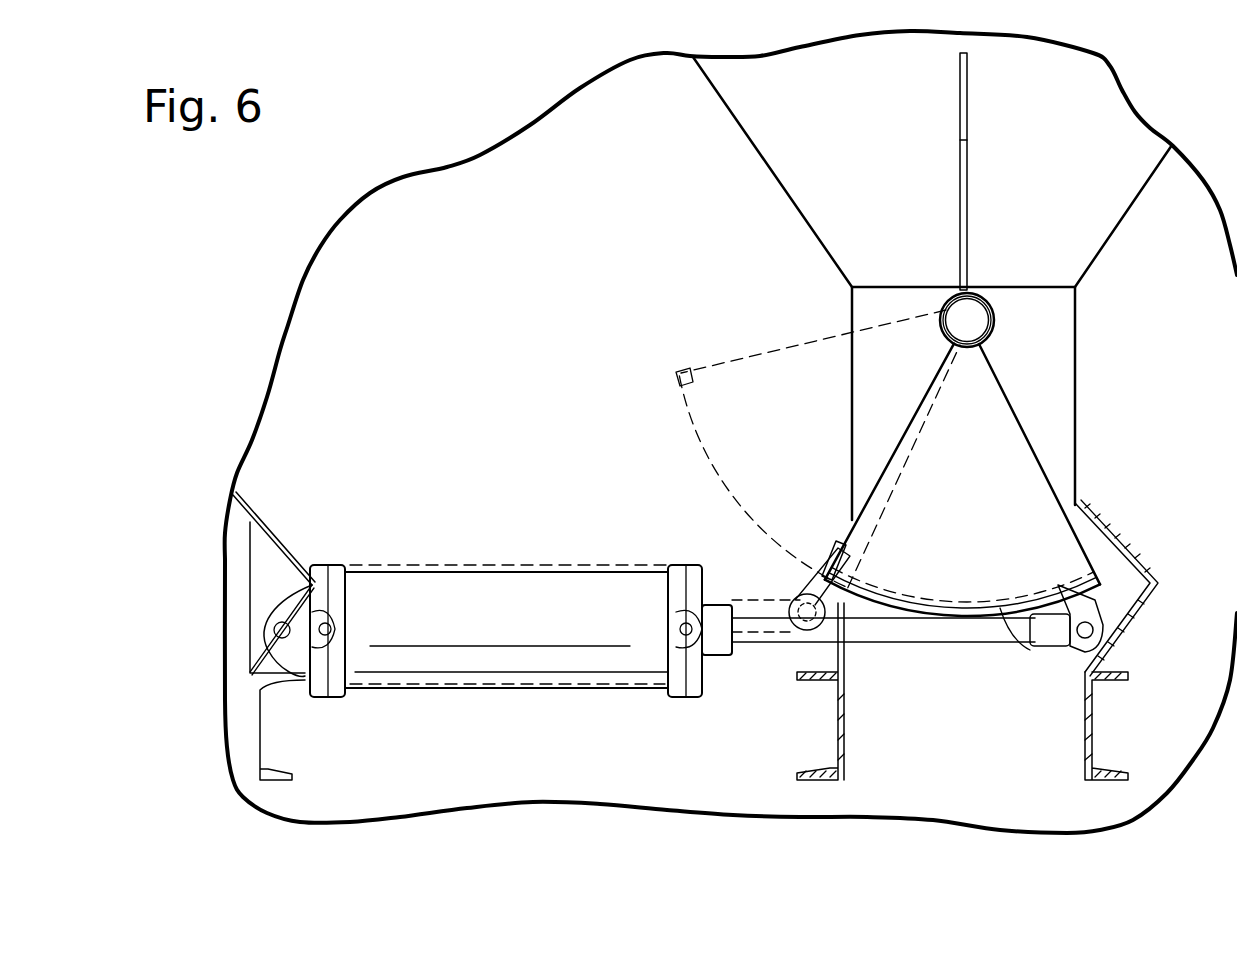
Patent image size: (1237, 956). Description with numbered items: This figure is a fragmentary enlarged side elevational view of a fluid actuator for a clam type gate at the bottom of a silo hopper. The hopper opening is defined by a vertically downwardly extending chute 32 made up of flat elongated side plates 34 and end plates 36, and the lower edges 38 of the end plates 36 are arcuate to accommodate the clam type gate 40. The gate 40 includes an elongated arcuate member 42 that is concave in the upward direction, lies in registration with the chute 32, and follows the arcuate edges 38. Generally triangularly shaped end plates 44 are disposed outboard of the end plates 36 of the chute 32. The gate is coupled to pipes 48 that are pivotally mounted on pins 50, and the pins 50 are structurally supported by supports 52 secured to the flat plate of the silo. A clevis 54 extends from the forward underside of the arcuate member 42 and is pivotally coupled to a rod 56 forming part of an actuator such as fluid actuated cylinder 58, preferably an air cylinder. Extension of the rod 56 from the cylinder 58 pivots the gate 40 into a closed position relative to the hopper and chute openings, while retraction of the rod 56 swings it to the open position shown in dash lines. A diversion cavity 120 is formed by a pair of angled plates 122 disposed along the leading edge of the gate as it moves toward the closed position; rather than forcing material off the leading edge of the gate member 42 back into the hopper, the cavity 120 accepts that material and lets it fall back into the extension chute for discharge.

The chute 32 is at (1080, 310).
The side plates 34 is at (852, 386).
The end plates 36 is at (872, 367).
The lower edges 38 is at (1000, 605).
The clam type gate 40 is at (931, 463).
The arcuate member 42 is at (963, 620).
The end plates 44 is at (1036, 410).
The pipes 48 is at (955, 305).
The pins 50 is at (960, 318).
The supports 52 is at (963, 152).
The clevis 54 is at (1100, 613).
The rod 56 is at (890, 635).
The fluid actuated cylinder 58 is at (497, 612).
The diversion cavity 120 is at (1105, 552).
The angled plates 122 is at (1135, 557).